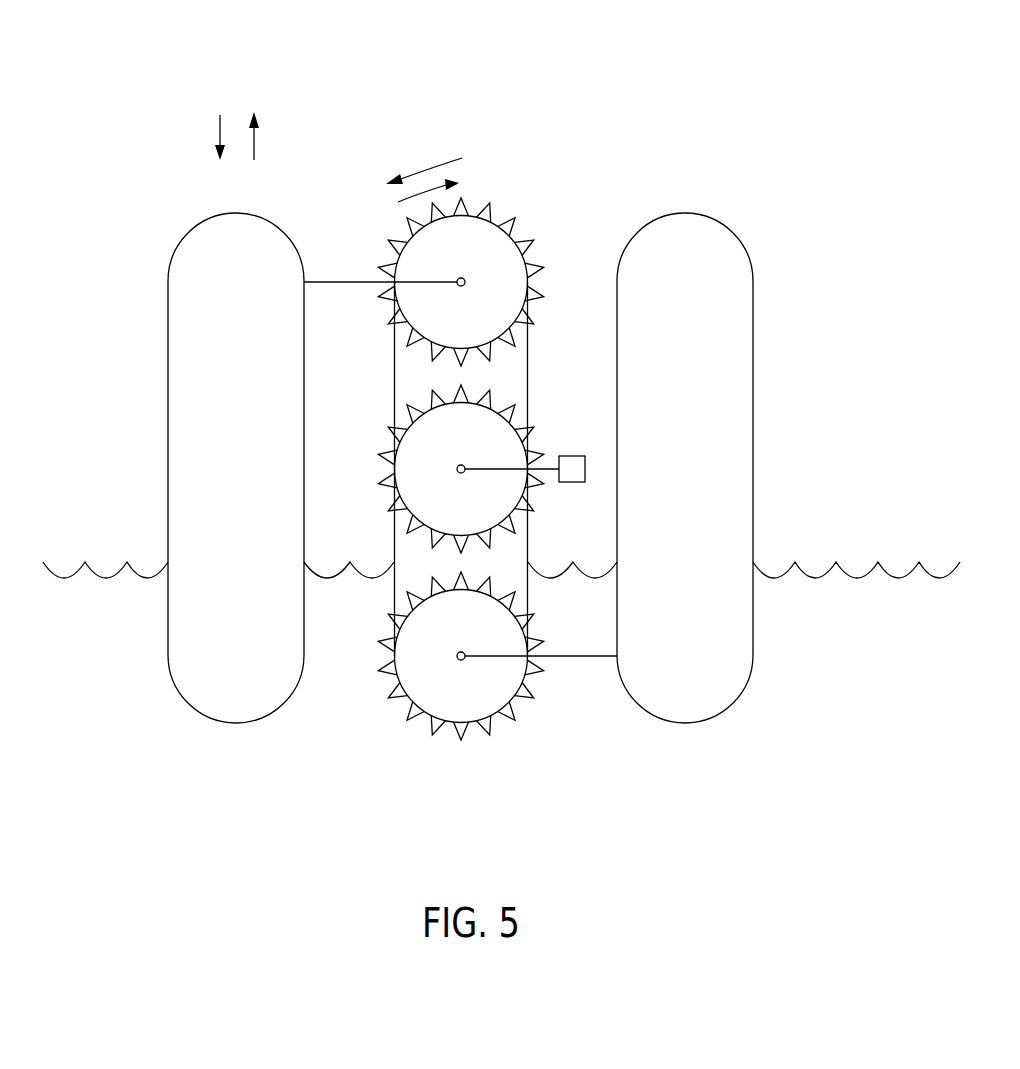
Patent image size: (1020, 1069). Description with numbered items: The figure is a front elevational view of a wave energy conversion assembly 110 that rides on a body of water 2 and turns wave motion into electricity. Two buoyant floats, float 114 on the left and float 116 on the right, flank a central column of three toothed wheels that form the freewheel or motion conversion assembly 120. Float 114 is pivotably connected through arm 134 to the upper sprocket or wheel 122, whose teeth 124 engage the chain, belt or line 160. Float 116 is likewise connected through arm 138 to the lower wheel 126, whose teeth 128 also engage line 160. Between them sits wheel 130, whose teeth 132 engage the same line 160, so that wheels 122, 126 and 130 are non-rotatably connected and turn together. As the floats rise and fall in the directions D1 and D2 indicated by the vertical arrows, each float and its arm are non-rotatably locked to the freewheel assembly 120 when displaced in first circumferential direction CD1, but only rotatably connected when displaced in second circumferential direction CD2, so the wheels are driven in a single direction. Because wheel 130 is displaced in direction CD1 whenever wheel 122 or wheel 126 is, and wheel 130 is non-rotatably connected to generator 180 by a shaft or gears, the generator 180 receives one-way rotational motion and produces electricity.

The body of water 2 is at (845, 674).
The wave energy conversion assembly 110 is at (158, 80).
The float 114 is at (251, 368).
The float 116 is at (700, 368).
The freewheel assembly 120 is at (476, 462).
The wheel 122 is at (476, 284).
The teeth 124 is at (520, 340).
The wheel 126 is at (460, 675).
The teeth 128 is at (506, 710).
The wheel 130 is at (476, 469).
The teeth 132 is at (512, 418).
The arm 134 is at (343, 284).
The arm 138 is at (570, 657).
The line 160 is at (529, 330).
The generator 180 is at (571, 474).
The first direction D1 is at (257, 152).
The second direction D2 is at (218, 135).
The first circumferential direction CD1 is at (437, 170).
The second circumferential direction CD2 is at (415, 165).